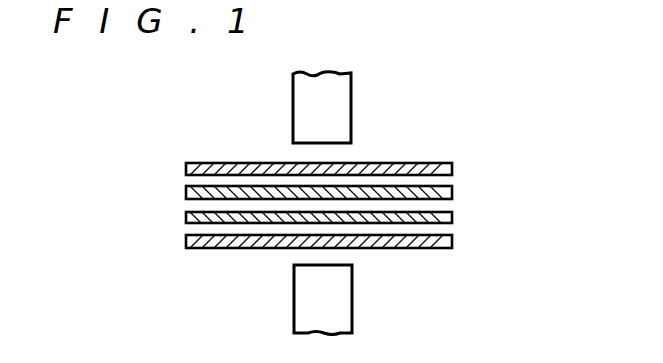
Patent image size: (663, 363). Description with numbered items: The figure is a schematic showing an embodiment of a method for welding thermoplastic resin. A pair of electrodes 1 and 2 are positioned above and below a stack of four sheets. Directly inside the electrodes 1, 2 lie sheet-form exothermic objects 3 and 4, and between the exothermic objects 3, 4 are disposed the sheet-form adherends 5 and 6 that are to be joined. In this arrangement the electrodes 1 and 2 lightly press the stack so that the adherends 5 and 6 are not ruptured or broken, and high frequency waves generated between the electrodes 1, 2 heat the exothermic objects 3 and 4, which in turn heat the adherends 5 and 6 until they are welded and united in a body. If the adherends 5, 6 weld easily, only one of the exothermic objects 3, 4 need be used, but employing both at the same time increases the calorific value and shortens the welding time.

The electrode 1 is at (340, 120).
The electrode 2 is at (340, 297).
The exothermic object 3 is at (452, 163).
The adherend 5 is at (452, 188).
The adherend 6 is at (452, 216).
The exothermic object 4 is at (452, 243).